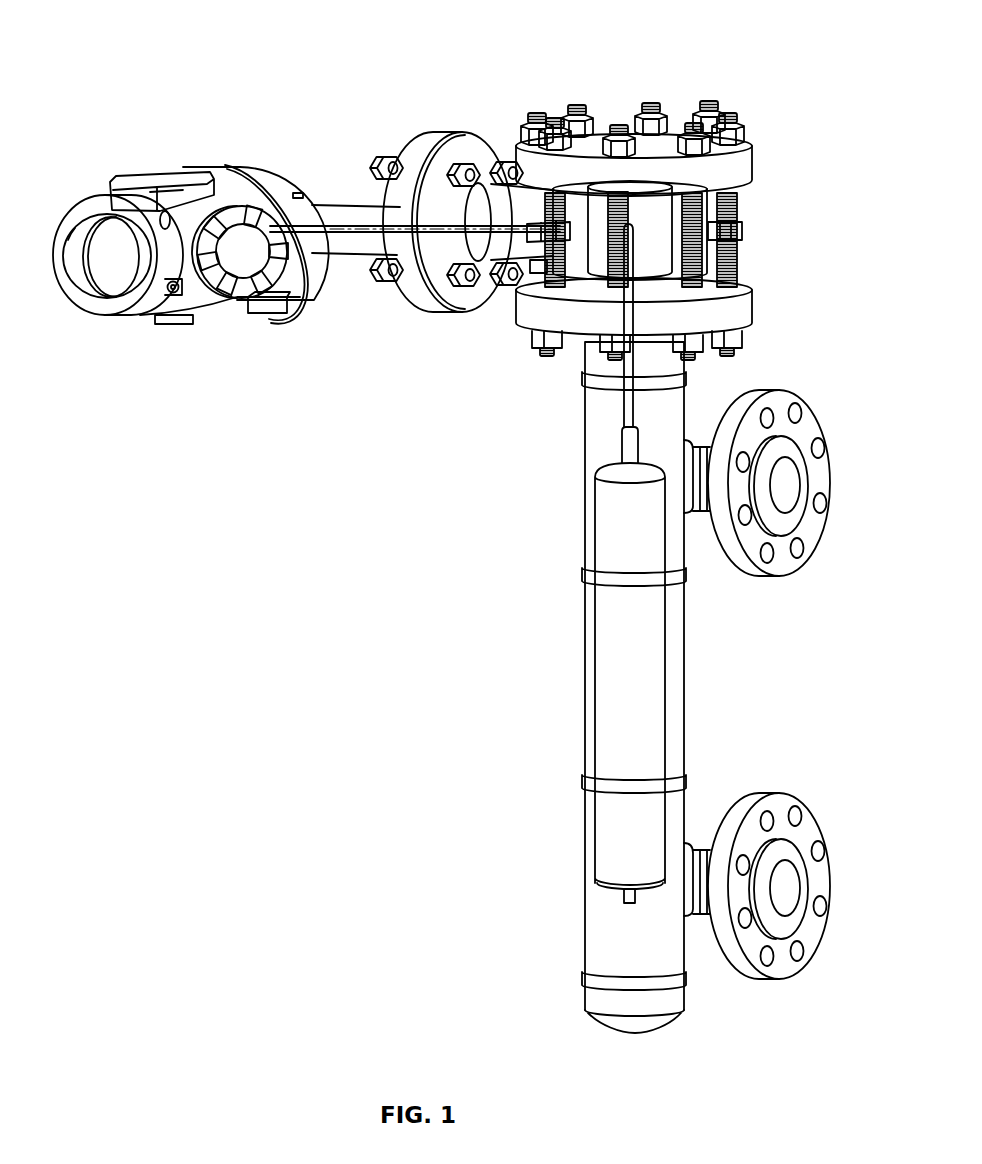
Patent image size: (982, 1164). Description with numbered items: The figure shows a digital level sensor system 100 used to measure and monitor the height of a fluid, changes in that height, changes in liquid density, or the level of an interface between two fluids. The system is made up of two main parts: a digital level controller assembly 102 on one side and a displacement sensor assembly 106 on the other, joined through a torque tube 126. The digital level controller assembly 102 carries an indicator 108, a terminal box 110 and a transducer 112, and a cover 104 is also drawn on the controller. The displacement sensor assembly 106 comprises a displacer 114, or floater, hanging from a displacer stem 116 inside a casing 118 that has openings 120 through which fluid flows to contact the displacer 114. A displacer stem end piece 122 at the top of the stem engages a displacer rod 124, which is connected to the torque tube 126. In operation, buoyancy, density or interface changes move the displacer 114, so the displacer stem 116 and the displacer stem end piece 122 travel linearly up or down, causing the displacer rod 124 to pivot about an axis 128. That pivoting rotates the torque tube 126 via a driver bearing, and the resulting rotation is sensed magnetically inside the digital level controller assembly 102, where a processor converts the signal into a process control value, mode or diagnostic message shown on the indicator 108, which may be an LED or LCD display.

The digital level sensor system 100 is at (145, 58).
The digital level controller assembly 102 is at (146, 165).
The housing cover 104 is at (262, 167).
The displacement sensor assembly 106 is at (782, 83).
The indicator 108 is at (83, 213).
The terminal box 110 is at (270, 265).
The transducer 112 is at (225, 182).
The displacer 114 is at (625, 693).
The displacer stem 116 is at (628, 368).
The casing 118 is at (685, 402).
The openings 120 is at (772, 487).
The displacer stem end piece 122 is at (630, 230).
The displacer rod 124 is at (602, 228).
The torque tube 126 is at (358, 250).
The axis 128 is at (443, 220).